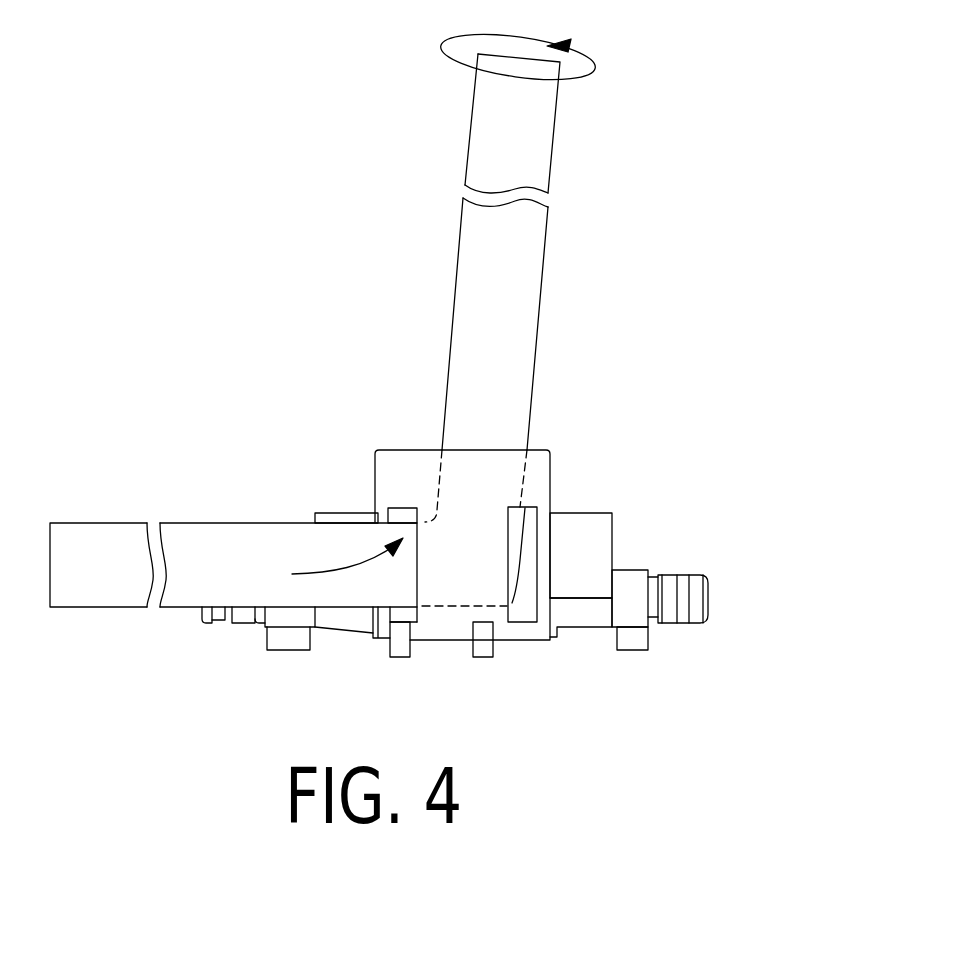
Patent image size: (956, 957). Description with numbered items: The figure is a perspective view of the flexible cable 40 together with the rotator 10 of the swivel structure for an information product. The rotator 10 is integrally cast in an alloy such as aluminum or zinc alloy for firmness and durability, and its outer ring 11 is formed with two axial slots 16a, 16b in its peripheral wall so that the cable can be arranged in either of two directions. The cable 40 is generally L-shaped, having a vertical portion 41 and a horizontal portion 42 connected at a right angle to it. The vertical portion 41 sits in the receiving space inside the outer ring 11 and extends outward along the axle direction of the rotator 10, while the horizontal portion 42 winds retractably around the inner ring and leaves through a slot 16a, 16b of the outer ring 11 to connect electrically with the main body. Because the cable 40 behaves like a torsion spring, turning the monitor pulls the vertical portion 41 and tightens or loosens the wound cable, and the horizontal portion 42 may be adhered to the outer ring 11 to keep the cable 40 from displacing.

The rotator 10 is at (708, 545).
The outer ring 11 is at (550, 470).
The axial slot 16a is at (400, 613).
The axial slot 16b is at (522, 607).
The flexible cable 40 is at (570, 219).
The vertical portion 41 is at (527, 302).
The horizontal portion 42 is at (197, 577).